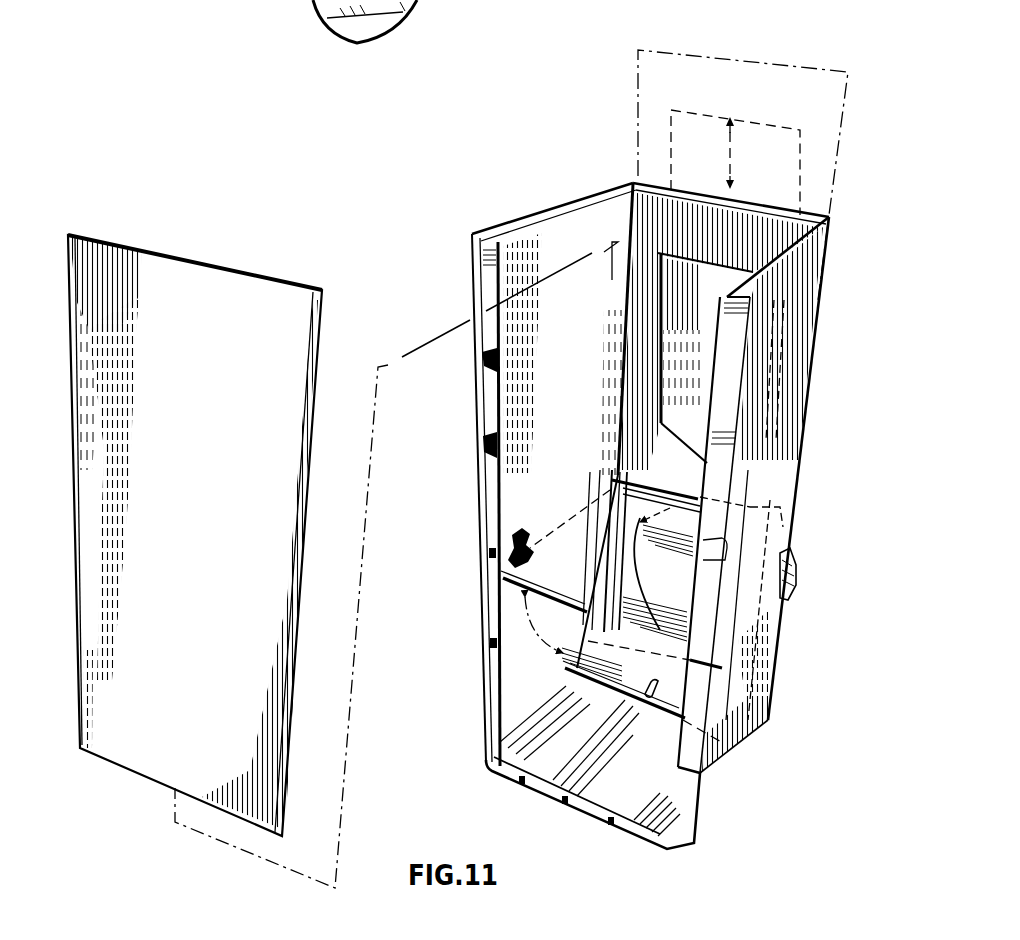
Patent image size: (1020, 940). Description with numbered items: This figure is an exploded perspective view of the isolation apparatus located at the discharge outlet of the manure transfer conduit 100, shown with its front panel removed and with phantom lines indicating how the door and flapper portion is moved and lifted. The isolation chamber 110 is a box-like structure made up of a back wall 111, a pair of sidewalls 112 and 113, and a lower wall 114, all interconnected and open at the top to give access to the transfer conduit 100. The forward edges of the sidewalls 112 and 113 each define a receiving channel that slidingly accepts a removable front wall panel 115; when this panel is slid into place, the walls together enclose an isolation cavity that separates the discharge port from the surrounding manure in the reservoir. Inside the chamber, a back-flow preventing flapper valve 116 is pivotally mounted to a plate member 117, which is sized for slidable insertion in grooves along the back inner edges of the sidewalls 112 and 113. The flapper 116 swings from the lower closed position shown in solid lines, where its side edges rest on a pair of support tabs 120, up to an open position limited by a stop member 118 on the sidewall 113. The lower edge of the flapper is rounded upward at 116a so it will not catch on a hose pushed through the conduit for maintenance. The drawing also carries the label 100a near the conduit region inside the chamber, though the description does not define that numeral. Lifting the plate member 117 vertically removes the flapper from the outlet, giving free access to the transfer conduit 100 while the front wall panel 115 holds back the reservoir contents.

The transfer conduit 100 is at (791, 582).
The latch slot 100a is at (669, 488).
The isolation chamber 110 is at (808, 411).
The back wall 111 is at (702, 278).
The sidewall 112 is at (797, 326).
The sidewall 113 is at (583, 217).
The lower wall 114 is at (647, 788).
The front wall panel 115 is at (146, 262).
The flapper valve 116 is at (603, 518).
The rounded lower edge of flapper 116a is at (664, 713).
The plate member 117 is at (740, 63).
The stop member 118 is at (522, 552).
The support tabs 120 is at (795, 634).